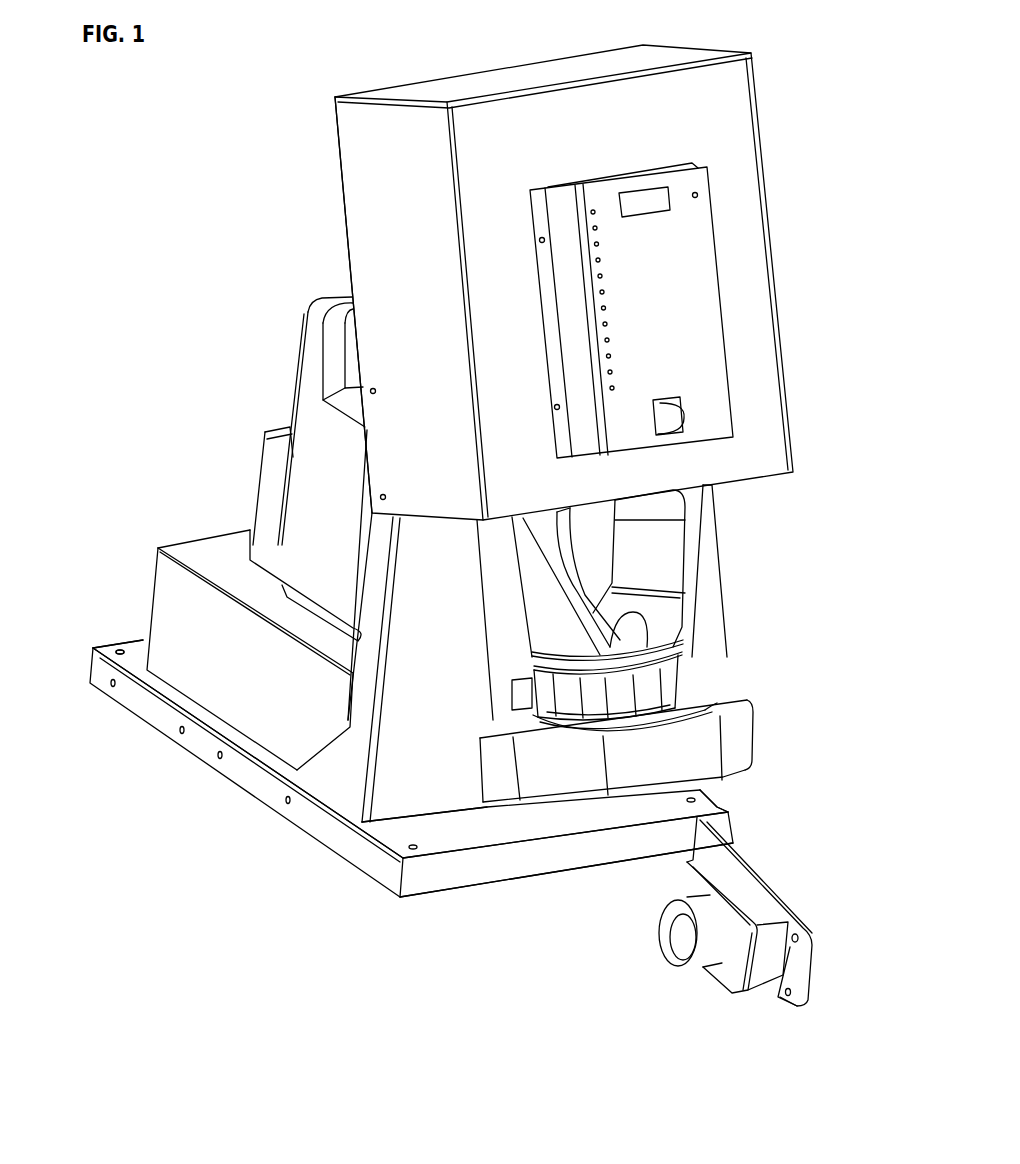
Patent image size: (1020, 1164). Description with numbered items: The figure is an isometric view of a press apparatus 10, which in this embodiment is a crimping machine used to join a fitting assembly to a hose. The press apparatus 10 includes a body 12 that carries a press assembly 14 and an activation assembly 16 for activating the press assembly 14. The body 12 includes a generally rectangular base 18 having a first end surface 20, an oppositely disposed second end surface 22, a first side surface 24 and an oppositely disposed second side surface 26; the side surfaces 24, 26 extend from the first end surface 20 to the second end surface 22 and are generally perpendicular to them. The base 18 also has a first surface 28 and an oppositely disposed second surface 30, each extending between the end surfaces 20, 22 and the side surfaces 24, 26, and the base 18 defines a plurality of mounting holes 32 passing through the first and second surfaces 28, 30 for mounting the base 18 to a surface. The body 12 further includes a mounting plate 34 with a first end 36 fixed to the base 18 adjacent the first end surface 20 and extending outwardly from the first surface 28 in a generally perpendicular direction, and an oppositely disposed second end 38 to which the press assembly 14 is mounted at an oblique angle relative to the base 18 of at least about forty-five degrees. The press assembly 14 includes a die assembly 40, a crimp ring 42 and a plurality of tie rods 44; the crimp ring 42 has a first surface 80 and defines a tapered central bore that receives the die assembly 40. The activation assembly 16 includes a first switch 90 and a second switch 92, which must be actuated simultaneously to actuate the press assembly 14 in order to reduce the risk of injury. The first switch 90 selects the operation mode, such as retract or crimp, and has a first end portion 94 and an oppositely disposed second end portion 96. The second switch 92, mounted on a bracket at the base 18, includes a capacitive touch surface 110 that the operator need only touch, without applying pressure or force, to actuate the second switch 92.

The press apparatus 10 is at (132, 166).
The body 12 is at (276, 361).
The press assembly 14 is at (739, 558).
The activation assembly 16 is at (765, 836).
The base 18 is at (278, 832).
The first end surface 20 is at (565, 836).
The second end surface 22 is at (143, 640).
The first side surface 24 is at (718, 807).
The second side surface 26 is at (248, 753).
The first surface 28 is at (424, 822).
The second surface 30 is at (447, 890).
The mounting holes 32 is at (117, 650).
The mounting plate 34 is at (368, 624).
The first end 36 is at (335, 782).
The second end 38 is at (384, 521).
The die assembly 40 is at (687, 661).
The crimp ring 42 is at (755, 717).
The tie rods 44 is at (478, 580).
The first surface 80 is at (715, 707).
The first switch 90 is at (693, 397).
The second switch 92 is at (634, 963).
The first end portion 94 is at (675, 406).
The second end portion 96 is at (674, 425).
The touch surface 110 is at (675, 933).